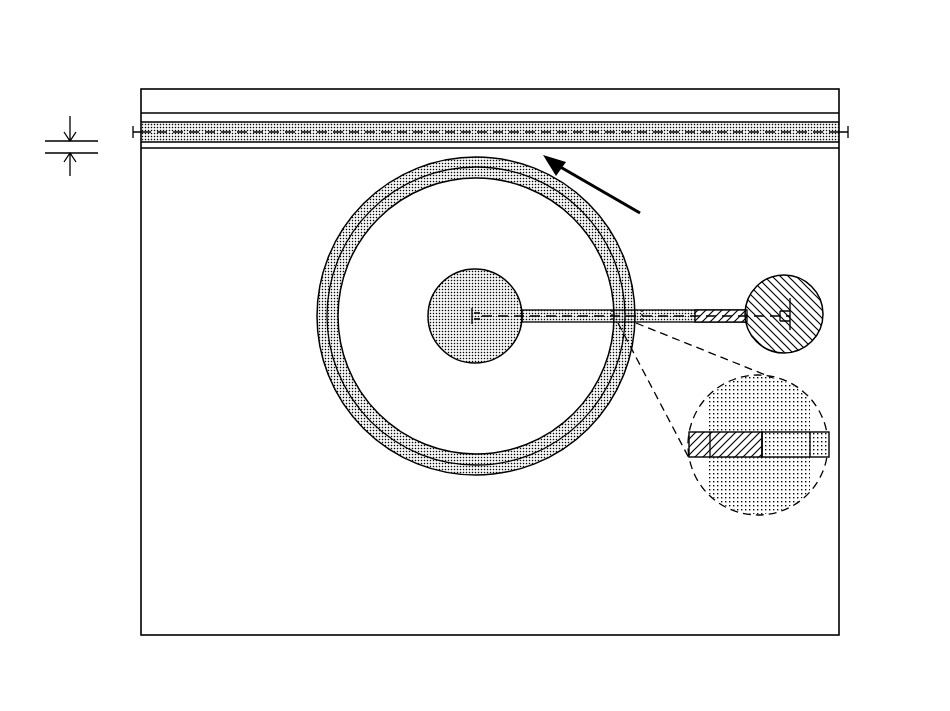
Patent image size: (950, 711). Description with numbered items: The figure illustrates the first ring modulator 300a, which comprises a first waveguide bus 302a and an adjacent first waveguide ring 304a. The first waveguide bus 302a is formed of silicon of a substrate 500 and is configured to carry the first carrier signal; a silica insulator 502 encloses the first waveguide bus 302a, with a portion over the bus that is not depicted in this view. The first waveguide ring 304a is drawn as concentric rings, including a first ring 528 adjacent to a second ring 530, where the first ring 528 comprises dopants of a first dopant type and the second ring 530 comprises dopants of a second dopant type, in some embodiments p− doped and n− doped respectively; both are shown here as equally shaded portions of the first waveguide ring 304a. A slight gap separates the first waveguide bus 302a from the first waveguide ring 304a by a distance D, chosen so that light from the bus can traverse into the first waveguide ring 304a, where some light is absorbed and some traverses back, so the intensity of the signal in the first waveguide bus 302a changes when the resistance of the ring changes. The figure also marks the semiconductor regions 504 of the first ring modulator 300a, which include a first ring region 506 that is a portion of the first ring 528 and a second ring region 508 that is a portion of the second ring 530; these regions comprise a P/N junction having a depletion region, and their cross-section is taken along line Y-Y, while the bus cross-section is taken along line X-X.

The first ring modulator 300a is at (181, 42).
The substrate 500 is at (503, 89).
The first waveguide bus 302a is at (663, 122).
The silica insulator 502 is at (840, 121).
The first waveguide ring 304a is at (485, 379).
The first ring 528 is at (328, 287).
The second ring 530 is at (322, 333).
The semiconductor regions 504 is at (670, 310).
The first ring region 506 is at (730, 458).
The second ring region 508 is at (788, 457).